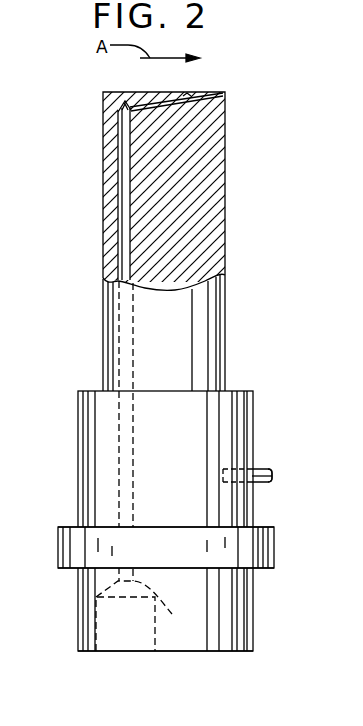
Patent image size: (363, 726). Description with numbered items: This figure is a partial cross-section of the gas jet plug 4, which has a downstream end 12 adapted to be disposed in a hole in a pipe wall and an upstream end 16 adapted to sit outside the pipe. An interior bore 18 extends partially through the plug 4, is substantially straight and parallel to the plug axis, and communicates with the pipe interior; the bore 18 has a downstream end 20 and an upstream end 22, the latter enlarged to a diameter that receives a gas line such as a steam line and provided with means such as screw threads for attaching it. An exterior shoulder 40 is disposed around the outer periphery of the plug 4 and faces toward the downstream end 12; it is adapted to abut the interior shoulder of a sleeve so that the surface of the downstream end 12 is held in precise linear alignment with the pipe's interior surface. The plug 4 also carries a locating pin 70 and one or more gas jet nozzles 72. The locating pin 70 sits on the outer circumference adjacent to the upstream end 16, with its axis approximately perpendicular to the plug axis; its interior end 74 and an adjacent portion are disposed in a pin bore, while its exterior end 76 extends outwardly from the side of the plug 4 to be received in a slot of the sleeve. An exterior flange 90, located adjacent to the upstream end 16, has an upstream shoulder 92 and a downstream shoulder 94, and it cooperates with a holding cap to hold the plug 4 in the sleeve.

The gas jet plug 4 is at (67, 321).
The downstream end 12 is at (130, 92).
The upstream end 16 is at (200, 652).
The interior bore 18 is at (130, 203).
The downstream end of bore 20 is at (120, 104).
The upstream end of bore 22 is at (145, 616).
The exterior shoulder 40 is at (95, 391).
The locating pin 70 is at (262, 470).
The gas jet nozzle 72 is at (173, 97).
The interior end 74 is at (222, 477).
The exterior end 76 is at (272, 479).
The exterior flange 90 is at (62, 548).
The upstream shoulder 92 is at (72, 568).
The downstream shoulder 94 is at (72, 527).